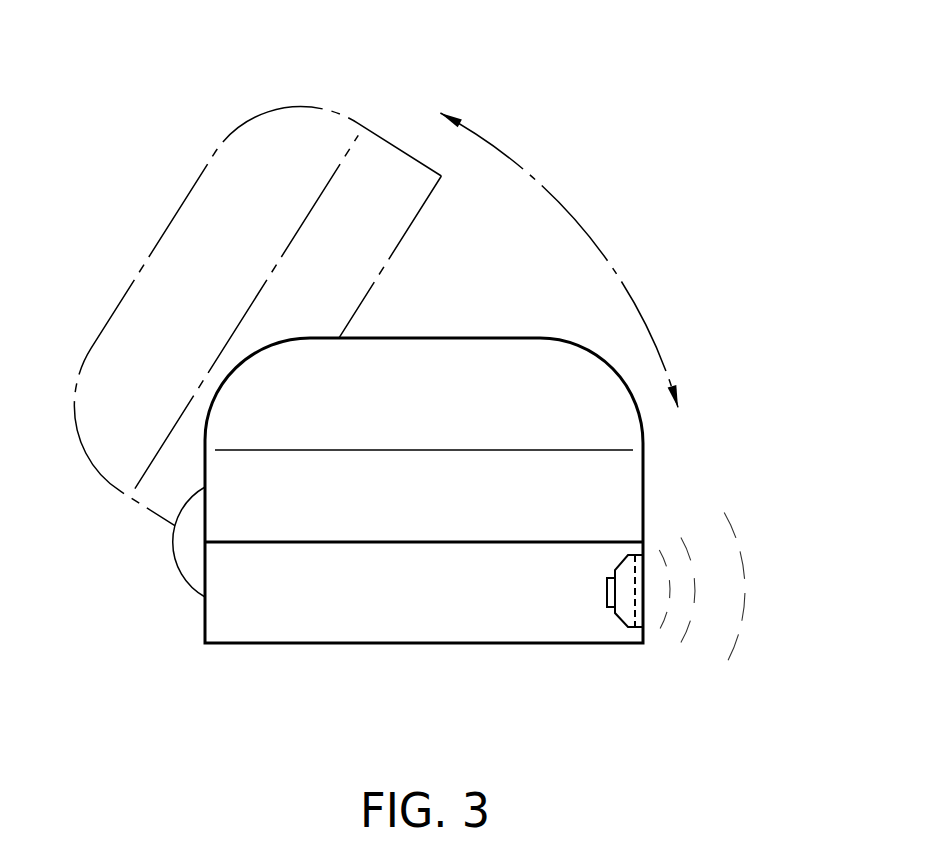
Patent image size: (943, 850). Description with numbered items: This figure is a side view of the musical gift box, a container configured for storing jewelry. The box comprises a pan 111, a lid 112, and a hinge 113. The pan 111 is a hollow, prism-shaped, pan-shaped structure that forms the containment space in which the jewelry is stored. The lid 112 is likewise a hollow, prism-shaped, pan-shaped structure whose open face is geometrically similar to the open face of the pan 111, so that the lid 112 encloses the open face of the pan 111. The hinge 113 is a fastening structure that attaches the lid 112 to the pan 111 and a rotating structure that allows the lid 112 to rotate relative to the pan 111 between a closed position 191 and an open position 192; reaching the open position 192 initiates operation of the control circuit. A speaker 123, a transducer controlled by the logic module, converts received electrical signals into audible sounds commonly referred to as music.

The pan 111 is at (478, 618).
The lid 112 is at (508, 360).
The hinge 113 is at (193, 555).
The speaker 123 is at (620, 619).
The closed position 191 is at (694, 444).
The open position 192 is at (414, 133).